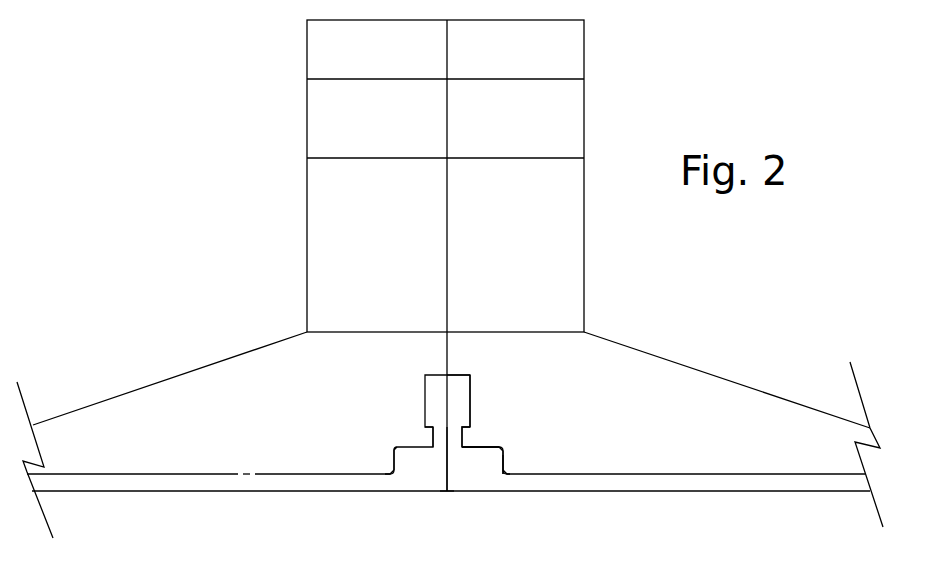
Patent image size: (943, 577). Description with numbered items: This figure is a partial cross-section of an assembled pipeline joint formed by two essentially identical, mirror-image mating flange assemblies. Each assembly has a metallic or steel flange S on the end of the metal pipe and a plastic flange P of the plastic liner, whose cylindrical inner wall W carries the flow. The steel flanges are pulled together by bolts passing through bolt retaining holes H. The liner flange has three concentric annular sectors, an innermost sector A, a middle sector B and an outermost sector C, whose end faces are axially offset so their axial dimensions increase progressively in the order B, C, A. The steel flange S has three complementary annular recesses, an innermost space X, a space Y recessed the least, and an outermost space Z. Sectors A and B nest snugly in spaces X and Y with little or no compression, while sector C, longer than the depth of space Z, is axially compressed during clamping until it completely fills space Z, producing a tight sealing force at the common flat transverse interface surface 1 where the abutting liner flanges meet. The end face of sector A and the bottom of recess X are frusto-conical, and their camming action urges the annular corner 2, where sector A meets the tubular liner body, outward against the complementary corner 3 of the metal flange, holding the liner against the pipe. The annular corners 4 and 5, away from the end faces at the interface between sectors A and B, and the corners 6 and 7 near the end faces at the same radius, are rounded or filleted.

The bolt retaining holes H is at (338, 127).
The steel flange S is at (525, 257).
The cylindrical inner wall of the liner W is at (230, 493).
The plastic flange P is at (435, 387).
The outermost annular sector C is at (462, 385).
The outermost annular recessed space Z is at (470, 402).
The middle annular recessed space Y is at (462, 438).
The innermost annular recessed space X is at (505, 460).
The transverse interface surface 1 is at (448, 492).
The annular corner of the liner 2 is at (502, 473).
The complementary corner of the metal flange 3 is at (505, 475).
The annular corner 4 is at (393, 447).
The annular corner 5 is at (392, 448).
The annular corner 6 is at (430, 430).
The annular corner 7 is at (432, 445).
The innermost annular sector A is at (492, 460).
The middle annular sector B is at (457, 442).